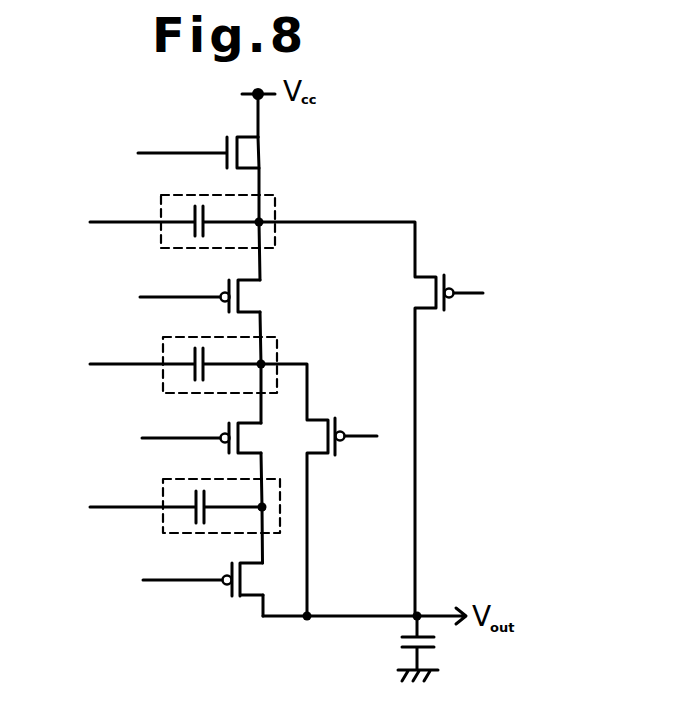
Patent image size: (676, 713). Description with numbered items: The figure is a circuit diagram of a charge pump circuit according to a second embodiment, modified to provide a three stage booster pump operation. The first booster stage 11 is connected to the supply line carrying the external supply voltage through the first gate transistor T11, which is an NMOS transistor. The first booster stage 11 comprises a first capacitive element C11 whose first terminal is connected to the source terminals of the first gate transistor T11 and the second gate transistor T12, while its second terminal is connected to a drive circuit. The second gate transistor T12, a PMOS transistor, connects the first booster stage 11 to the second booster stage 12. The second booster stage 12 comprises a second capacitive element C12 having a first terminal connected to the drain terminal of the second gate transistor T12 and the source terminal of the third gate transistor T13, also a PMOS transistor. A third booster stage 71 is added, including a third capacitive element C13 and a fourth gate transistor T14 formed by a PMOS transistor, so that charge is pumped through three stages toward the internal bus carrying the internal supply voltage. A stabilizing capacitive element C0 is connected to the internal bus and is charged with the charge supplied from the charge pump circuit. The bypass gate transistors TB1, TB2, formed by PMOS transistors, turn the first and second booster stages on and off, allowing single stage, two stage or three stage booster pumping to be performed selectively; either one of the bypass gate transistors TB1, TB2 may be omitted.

The first gate transistor T11 is at (246, 135).
The second gate transistor T12 is at (246, 278).
The third gate transistor T13 is at (247, 421).
The fourth gate transistor T14 is at (246, 597).
The first capacitive element C11 is at (193, 212).
The second capacitive element C12 is at (194, 354).
The third capacitive element C13 is at (197, 497).
The first booster stage 11 is at (160, 196).
The second booster stage 12 is at (162, 340).
The third booster stage 71 is at (163, 482).
The bypass gate transistor TB1 is at (425, 276).
The bypass gate transistor TB2 is at (341, 403).
The stabilizing capacitive element C0 is at (406, 651).